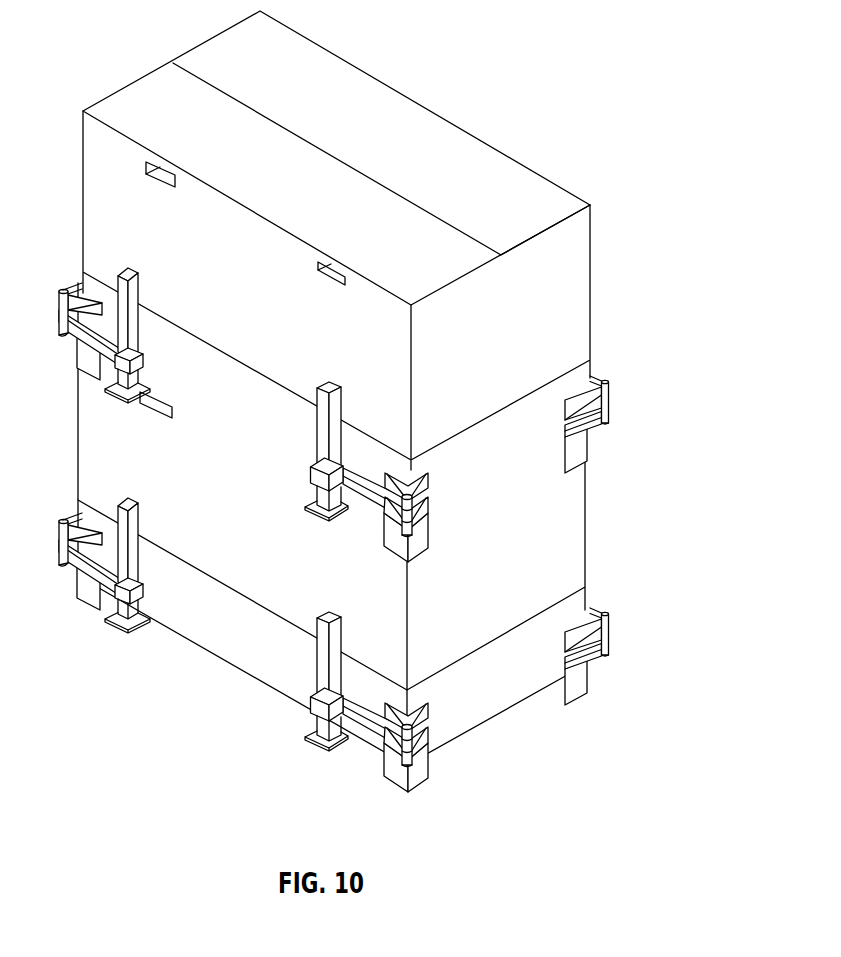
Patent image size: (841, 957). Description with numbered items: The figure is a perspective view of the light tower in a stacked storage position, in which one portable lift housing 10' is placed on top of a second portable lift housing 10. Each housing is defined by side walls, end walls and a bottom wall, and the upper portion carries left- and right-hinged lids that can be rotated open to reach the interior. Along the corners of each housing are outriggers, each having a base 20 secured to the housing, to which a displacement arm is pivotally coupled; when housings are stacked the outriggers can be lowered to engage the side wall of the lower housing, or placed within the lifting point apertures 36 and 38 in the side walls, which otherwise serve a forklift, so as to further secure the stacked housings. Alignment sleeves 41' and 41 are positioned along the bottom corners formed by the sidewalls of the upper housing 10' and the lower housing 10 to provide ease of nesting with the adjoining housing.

The portable lift housing 10' is at (359, 240).
The portable lift housing 10 is at (355, 486).
The alignment sleeve 41' is at (628, 424).
The alignment sleeve 41 is at (625, 656).
The lifting point aperture 36 is at (153, 412).
The base 20 is at (313, 493).
The lifting point aperture 38 is at (337, 516).